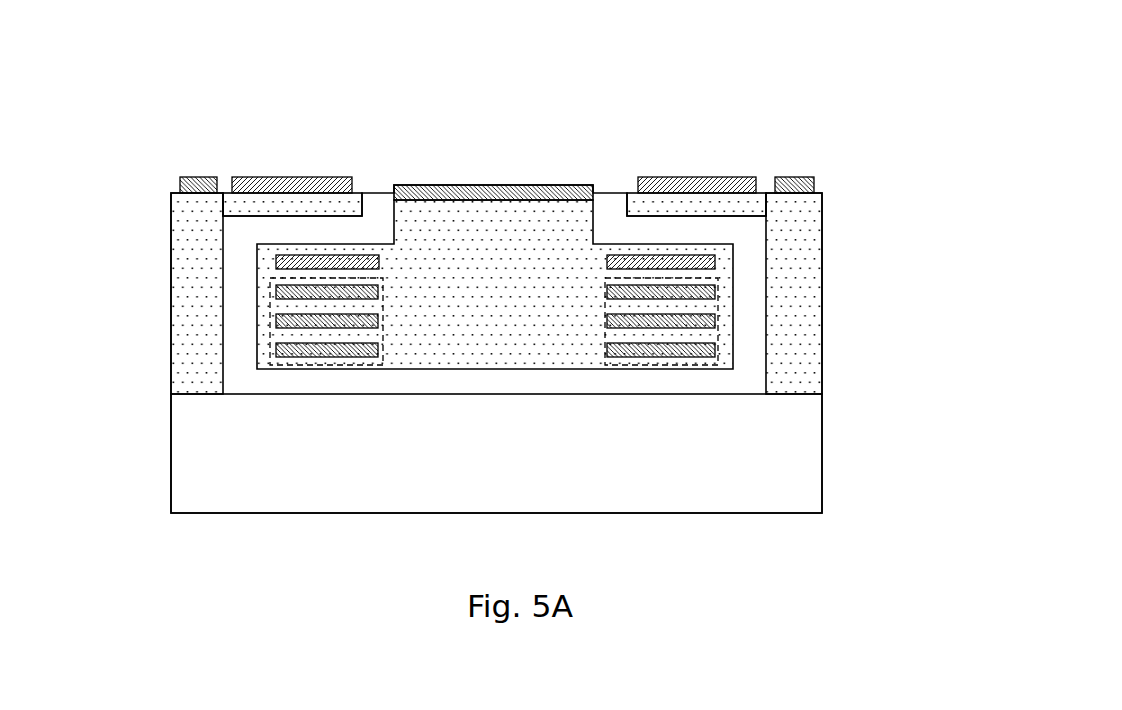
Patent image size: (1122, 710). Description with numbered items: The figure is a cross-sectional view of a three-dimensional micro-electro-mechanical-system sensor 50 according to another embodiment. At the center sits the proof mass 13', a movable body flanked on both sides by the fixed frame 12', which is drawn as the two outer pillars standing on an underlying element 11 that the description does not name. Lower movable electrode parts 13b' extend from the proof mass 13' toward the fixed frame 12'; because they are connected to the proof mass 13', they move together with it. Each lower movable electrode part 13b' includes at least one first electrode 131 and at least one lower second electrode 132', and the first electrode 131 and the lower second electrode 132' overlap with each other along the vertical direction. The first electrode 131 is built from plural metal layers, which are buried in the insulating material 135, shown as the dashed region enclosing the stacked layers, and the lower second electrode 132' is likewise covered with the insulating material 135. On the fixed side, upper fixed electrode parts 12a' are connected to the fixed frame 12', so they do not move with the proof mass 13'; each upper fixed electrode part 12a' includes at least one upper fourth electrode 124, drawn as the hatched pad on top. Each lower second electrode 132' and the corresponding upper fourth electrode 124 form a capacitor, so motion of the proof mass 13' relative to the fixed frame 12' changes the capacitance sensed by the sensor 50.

The substrate 11 is at (232, 468).
The fixed frame 12' is at (545, 257).
The upper fixed electrode part 12a' is at (493, 151).
The upper fourth electrode 124 is at (268, 178).
The proof mass 13' is at (495, 218).
The first electrode 131 is at (270, 308).
The lower second electrode 132' is at (493, 236).
The insulating material 135 is at (270, 272).
The lower movable electrode part 13b' is at (495, 319).
The three-dimensional MEMS sensor 50 is at (811, 77).